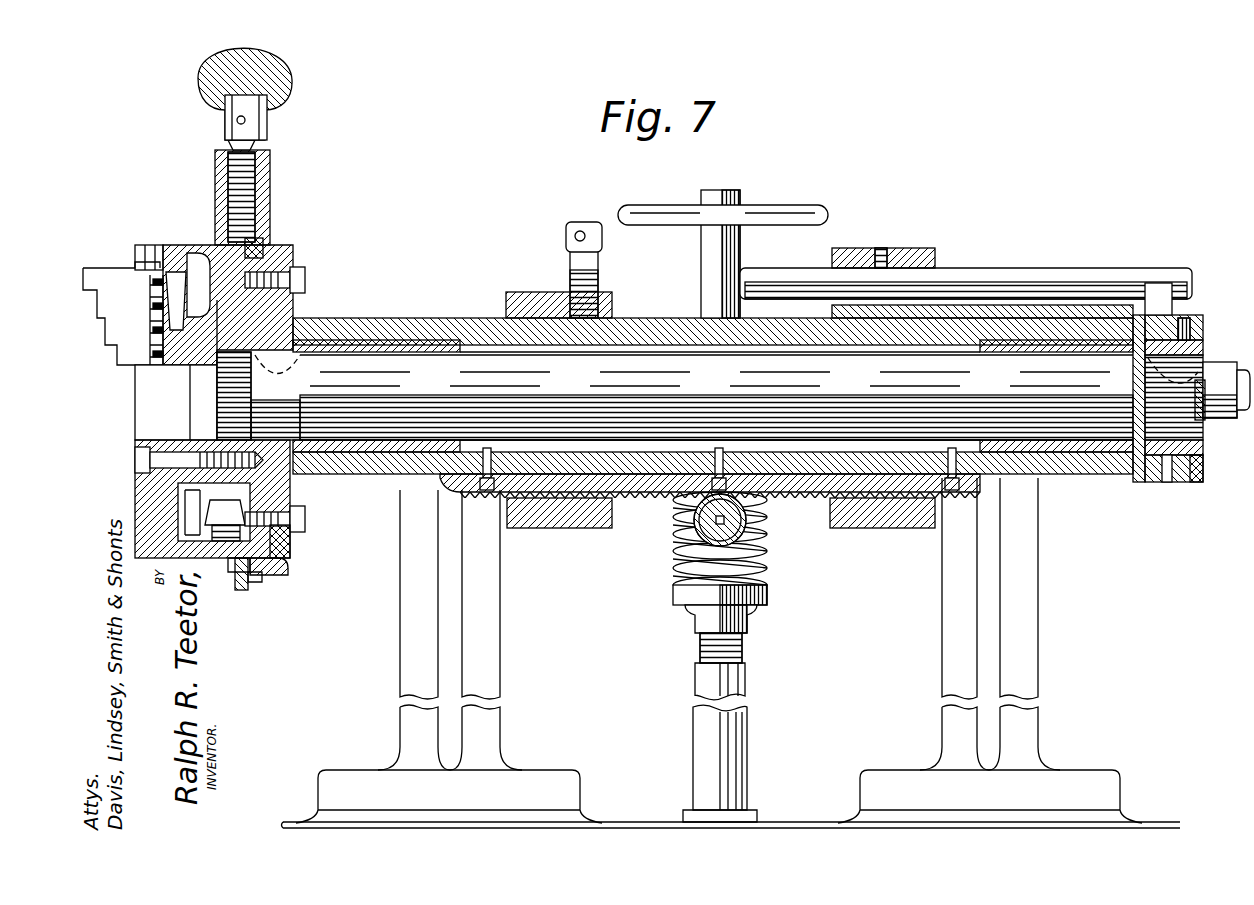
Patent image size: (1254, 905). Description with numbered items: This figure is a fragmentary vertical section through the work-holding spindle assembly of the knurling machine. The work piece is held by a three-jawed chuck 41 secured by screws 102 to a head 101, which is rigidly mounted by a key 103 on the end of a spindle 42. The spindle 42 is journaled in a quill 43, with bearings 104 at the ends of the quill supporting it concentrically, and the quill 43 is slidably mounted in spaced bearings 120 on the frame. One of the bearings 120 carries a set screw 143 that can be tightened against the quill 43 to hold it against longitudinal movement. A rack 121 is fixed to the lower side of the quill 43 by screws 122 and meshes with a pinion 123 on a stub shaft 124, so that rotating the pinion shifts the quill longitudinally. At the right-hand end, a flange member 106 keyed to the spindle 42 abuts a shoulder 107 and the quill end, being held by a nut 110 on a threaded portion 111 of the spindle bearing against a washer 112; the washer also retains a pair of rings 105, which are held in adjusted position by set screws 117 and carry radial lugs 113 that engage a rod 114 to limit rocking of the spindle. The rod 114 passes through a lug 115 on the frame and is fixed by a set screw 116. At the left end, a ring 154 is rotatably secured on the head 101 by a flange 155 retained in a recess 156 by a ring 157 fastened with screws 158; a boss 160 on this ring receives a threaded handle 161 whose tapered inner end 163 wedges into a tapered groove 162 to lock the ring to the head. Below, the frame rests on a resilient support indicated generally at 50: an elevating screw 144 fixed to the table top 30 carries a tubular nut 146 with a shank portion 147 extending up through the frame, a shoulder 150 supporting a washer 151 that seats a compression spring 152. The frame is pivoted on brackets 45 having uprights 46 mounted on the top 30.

The top 30 is at (626, 822).
The chuck 41 is at (165, 245).
The spindle 42 is at (480, 372).
The quill 43 is at (405, 328).
The brackets 45 is at (525, 778).
The upright 46 is at (495, 657).
The drive assembly 50 is at (707, 579).
The head 101 is at (265, 502).
The screws 102 is at (175, 458).
The key 103 is at (290, 358).
The bearings 104 is at (386, 347).
The rings 105 is at (1170, 482).
The flange member 106 is at (1203, 432).
The shoulder 107 is at (1135, 384).
The nut 110 is at (1215, 362).
The threaded portion 111 is at (1244, 380).
The washer 112 is at (1200, 470).
The lugs 113 is at (1172, 312).
The rod 114 is at (1040, 275).
The lug 115 is at (935, 252).
The set screw 116 is at (881, 248).
The set screws 117 is at (1188, 325).
The bearings 120 is at (547, 528).
The rack 121 is at (625, 498).
The screws 122 is at (503, 442).
The pinion 123 is at (746, 524).
The stub shaft 124 is at (746, 546).
The set screw 143 is at (577, 262).
The elevating screw 144 is at (740, 737).
The tubular nut 146 is at (746, 628).
The shank portion 147 is at (742, 195).
The shoulder 150 is at (758, 609).
The washer 151 is at (762, 592).
The compression spring 152 is at (768, 572).
The ring 154 is at (256, 578).
The flange 155 is at (286, 560).
The recess 156 is at (260, 572).
The ring 157 is at (292, 543).
The screws 158 is at (300, 519).
The boss 160 is at (272, 188).
The handle 161 is at (265, 120).
The tapered groove 162 is at (240, 578).
The tapered inner end 163 is at (266, 245).